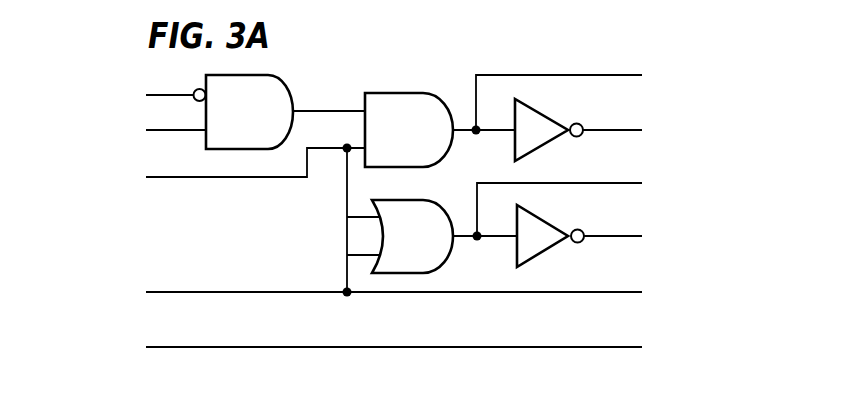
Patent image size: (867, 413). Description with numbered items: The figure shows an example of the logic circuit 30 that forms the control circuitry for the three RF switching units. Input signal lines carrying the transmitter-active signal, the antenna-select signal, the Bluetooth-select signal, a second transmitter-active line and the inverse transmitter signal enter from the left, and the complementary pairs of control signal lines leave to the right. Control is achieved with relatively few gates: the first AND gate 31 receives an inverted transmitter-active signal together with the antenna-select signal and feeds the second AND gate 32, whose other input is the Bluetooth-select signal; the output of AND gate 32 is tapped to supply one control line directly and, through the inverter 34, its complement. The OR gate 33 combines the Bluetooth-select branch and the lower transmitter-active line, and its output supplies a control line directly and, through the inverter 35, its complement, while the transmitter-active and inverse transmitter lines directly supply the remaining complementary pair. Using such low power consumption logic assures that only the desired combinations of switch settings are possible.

The switch control logic circuit 30 is at (533, 53).
The AND gate 31 is at (268, 74).
The AND gate 32 is at (417, 92).
The OR gate 33 is at (417, 199).
The inverter 34 is at (558, 94).
The inverter 35 is at (558, 204).